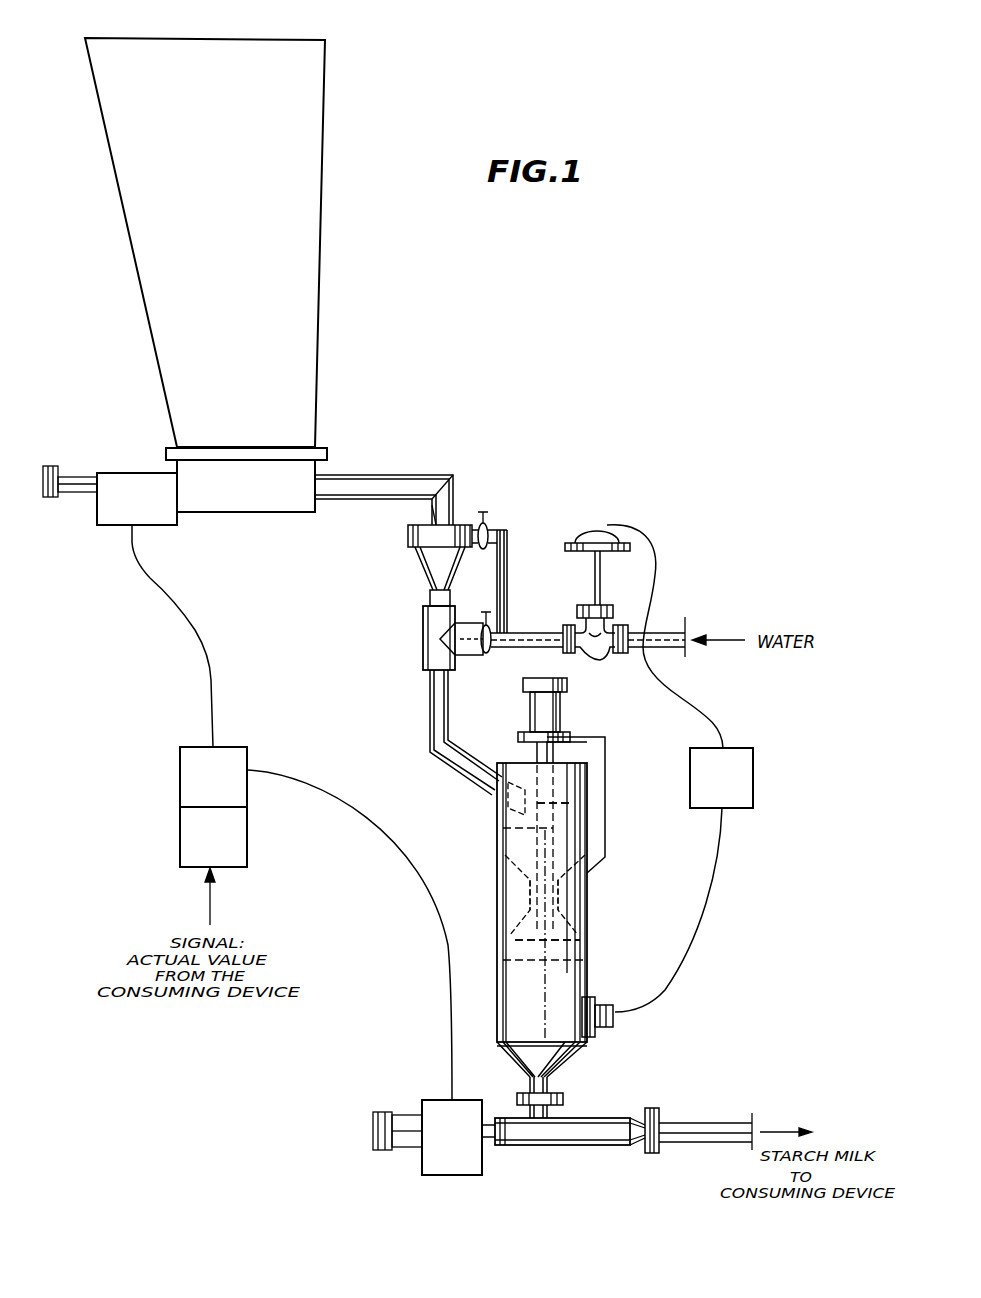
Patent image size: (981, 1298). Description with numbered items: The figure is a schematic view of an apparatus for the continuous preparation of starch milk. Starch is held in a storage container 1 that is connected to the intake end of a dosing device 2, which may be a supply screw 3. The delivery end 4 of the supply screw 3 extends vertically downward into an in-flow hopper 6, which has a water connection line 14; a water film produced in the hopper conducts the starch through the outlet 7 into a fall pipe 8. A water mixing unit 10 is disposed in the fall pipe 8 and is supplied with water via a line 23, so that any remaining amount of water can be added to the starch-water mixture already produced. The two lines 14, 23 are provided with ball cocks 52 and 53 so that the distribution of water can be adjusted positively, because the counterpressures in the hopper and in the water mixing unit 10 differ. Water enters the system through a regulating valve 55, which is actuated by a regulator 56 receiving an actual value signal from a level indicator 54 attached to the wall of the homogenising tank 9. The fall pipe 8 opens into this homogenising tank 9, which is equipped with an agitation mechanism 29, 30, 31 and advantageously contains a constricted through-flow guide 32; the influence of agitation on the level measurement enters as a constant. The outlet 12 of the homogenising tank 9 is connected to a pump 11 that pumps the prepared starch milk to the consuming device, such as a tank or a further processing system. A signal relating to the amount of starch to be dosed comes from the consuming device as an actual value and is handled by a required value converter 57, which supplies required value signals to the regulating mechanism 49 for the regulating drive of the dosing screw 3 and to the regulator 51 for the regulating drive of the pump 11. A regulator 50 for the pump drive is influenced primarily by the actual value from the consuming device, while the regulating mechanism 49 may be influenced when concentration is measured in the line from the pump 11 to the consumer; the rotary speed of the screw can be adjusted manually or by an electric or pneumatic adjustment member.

The storage container 1 is at (313, 132).
The dosing device 2 is at (348, 461).
The supply screw 3 is at (399, 478).
The delivery end 4 is at (432, 515).
The in-flow hopper 6 is at (428, 568).
The outlet 7 is at (429, 604).
The fall pipe 8 is at (432, 714).
The homogenising tank 9 is at (498, 894).
The water mixing unit 10 is at (428, 643).
The pump 11 is at (563, 1145).
The outlet 12 is at (564, 1103).
The water connection line 14 is at (495, 535).
The line 23 is at (486, 656).
The agitation mechanism 29 is at (590, 797).
The agitation mechanism 30 is at (556, 706).
The agitation mechanism 31 is at (590, 932).
The constricted through-flow guide 32 is at (590, 897).
The regulating mechanism 49 is at (128, 481).
The regulator 50 is at (432, 1110).
The regulator 51 is at (189, 784).
The ball cock 52 is at (481, 524).
The ball cock 53 is at (482, 624).
The level indicator 54 is at (606, 1028).
The regulating valve 55 is at (597, 658).
The regulator 56 is at (745, 781).
The required value converter 57 is at (193, 844).